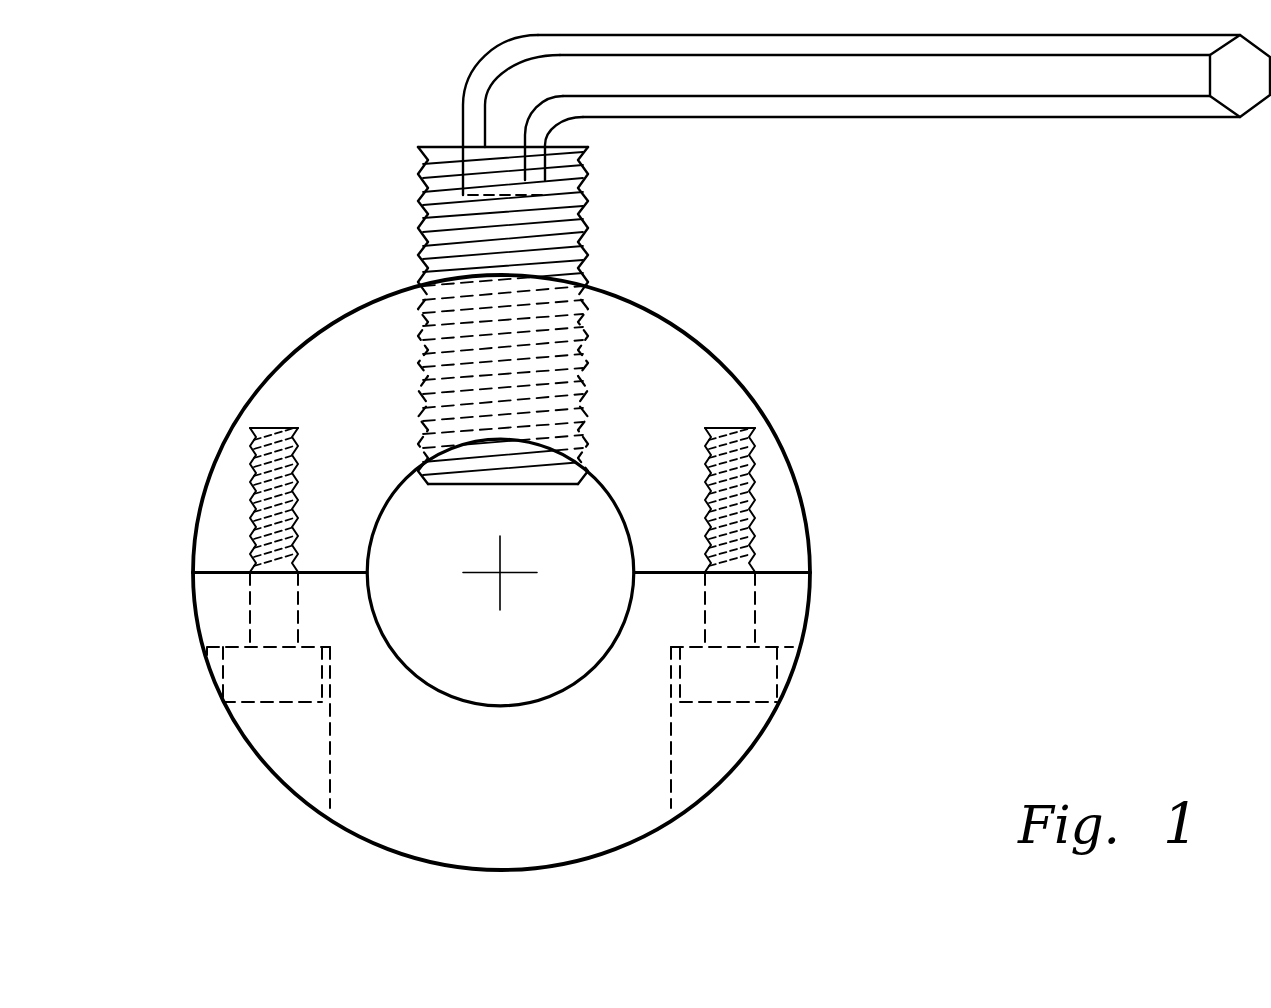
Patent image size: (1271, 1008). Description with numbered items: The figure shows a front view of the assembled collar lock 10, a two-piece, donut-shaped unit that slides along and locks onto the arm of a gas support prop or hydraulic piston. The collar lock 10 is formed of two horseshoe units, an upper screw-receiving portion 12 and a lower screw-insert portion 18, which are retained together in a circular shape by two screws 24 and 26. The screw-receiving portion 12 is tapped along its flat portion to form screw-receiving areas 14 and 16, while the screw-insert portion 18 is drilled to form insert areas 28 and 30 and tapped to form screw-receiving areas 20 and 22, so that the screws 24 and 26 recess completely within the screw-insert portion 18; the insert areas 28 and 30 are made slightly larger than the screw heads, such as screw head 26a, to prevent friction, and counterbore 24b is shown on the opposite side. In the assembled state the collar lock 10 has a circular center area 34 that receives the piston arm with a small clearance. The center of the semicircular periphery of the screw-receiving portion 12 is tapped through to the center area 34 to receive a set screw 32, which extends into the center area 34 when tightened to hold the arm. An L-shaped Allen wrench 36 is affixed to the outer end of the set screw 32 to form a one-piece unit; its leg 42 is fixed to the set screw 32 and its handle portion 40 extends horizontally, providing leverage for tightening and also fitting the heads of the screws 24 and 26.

The collar lock 10 is at (337, 307).
The screw-receiving portion 12 is at (687, 355).
The screw-receiving area 14 is at (754, 455).
The screw-receiving area 16 is at (250, 448).
The screw-insert portion 18 is at (590, 822).
The screw-receiving area 20 is at (740, 597).
The screw-receiving area 22 is at (252, 612).
The screw 24 is at (256, 496).
The left counterbore 24b is at (233, 677).
The screw 26 is at (750, 518).
The screw head 26a is at (772, 665).
The insert area 28 is at (715, 758).
The insert area 30 is at (263, 764).
The set screw 32 is at (585, 330).
The center area 34 is at (565, 656).
The Allen wrench 36 is at (908, 97).
The handle portion 40 is at (1163, 108).
The leg 42 is at (538, 143).